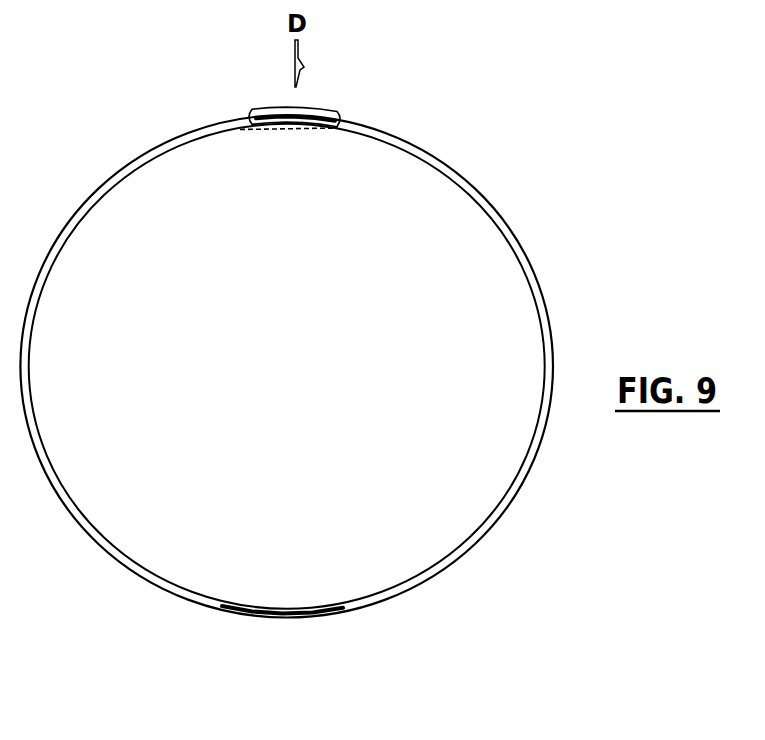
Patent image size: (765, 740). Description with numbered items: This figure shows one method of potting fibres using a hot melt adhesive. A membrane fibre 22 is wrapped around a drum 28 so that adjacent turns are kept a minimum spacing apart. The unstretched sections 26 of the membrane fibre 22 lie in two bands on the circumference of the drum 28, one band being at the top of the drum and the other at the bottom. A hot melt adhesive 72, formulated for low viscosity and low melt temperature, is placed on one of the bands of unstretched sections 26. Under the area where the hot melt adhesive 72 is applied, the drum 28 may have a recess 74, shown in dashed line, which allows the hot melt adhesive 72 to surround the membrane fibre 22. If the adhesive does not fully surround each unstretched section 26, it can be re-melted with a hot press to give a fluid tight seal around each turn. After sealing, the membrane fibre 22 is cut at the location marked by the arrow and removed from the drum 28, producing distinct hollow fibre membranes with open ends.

The membrane fibre 22 is at (387, 598).
The drum 28 is at (197, 595).
The unstretched sections 26 is at (343, 122).
The hot melt adhesive 72 is at (318, 107).
The recess 74 is at (315, 130).